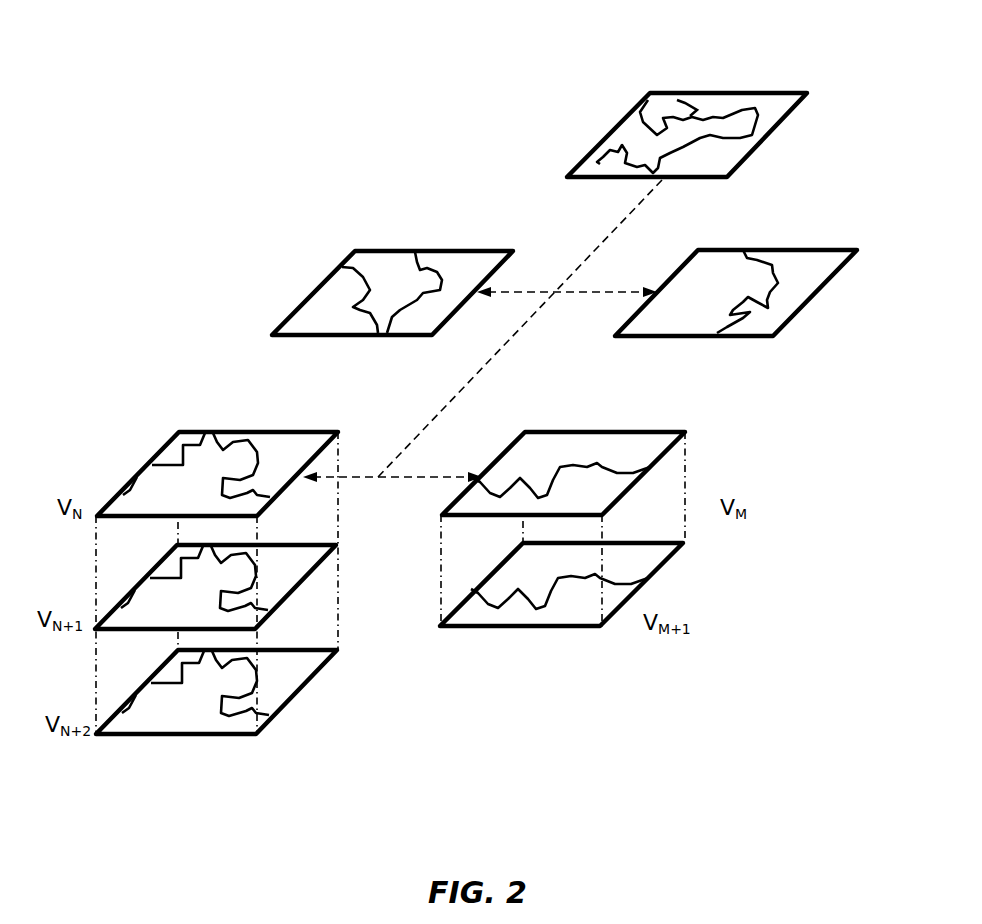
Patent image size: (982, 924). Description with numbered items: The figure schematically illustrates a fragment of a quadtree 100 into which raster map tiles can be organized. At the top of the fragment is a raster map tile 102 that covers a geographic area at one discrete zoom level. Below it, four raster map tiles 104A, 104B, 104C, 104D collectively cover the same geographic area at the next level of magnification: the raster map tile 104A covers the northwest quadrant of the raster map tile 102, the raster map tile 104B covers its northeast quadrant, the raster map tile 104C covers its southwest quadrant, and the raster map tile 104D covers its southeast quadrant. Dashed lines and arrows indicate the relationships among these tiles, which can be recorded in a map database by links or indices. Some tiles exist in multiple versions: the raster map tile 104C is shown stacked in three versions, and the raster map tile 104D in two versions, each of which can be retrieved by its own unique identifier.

The quadtree 100 is at (466, 42).
The raster map tile 102 is at (767, 143).
The raster map tile 104A is at (367, 250).
The raster map tile 104B is at (832, 283).
The raster map tile 104C is at (188, 430).
The raster map tile 104D is at (685, 433).